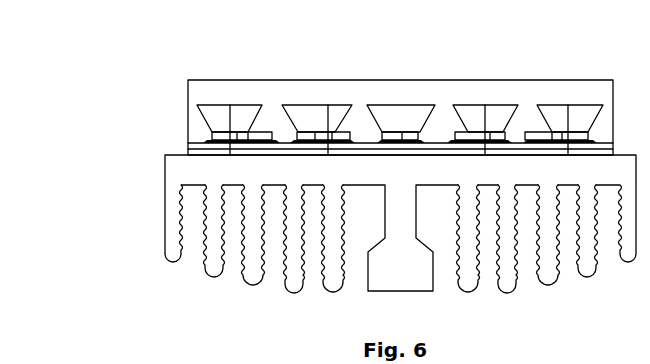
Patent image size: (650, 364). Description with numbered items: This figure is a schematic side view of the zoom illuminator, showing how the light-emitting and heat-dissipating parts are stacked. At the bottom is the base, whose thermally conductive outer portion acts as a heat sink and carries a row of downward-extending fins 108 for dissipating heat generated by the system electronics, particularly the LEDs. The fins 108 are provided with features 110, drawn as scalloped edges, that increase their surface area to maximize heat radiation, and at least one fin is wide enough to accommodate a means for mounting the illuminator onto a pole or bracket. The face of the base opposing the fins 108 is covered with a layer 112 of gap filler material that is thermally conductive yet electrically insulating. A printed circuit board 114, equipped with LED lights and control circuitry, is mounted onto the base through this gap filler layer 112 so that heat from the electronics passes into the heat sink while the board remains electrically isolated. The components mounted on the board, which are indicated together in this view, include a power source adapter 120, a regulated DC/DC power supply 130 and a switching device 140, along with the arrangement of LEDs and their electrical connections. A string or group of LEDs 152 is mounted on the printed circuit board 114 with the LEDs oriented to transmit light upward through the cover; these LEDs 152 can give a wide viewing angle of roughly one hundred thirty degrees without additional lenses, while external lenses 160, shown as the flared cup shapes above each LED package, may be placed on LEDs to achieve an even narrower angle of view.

The fins 108 is at (253, 268).
The features 110 is at (578, 247).
The layer of gap filler material 112 is at (190, 150).
The printed circuit board 114 is at (191, 146).
The power source adapter 120 is at (317, 104).
The regulated DC/DC power supply 130 is at (317, 104).
The switching device 140 is at (197, 95).
The LEDs 152 is at (257, 135).
The lenses 160 is at (218, 117).